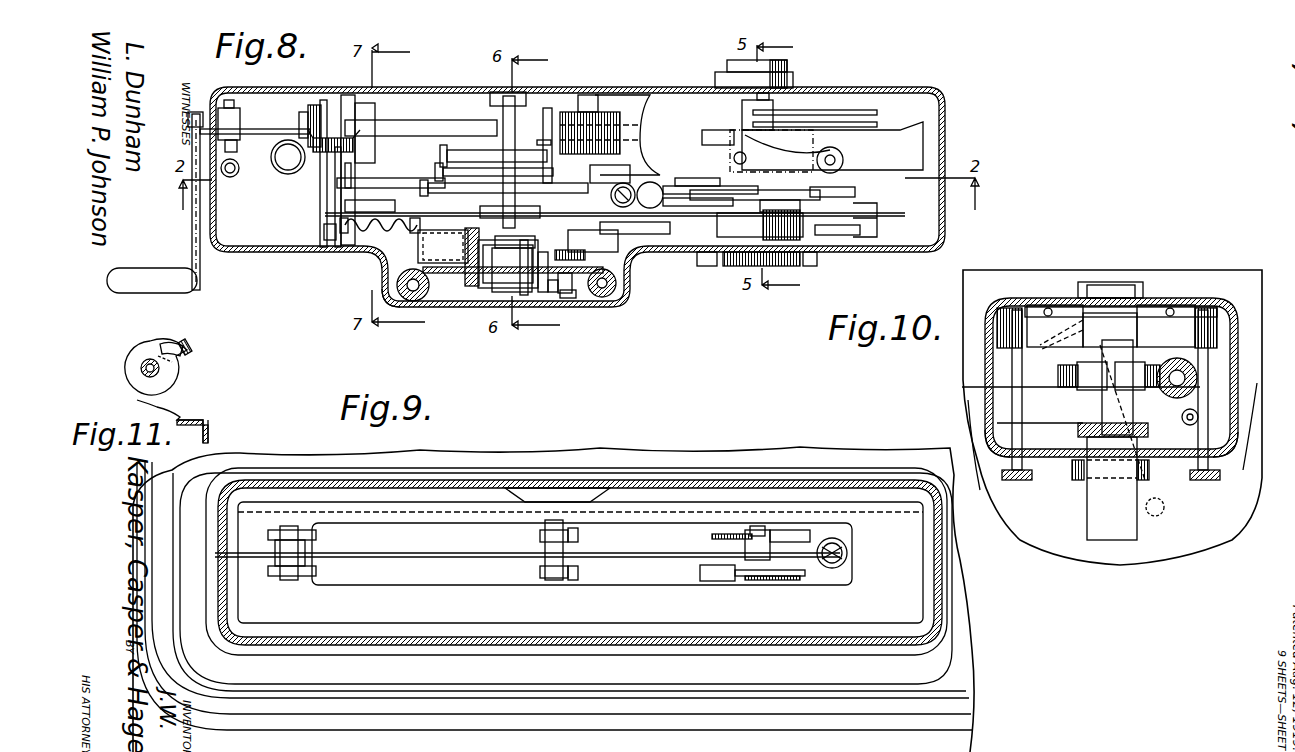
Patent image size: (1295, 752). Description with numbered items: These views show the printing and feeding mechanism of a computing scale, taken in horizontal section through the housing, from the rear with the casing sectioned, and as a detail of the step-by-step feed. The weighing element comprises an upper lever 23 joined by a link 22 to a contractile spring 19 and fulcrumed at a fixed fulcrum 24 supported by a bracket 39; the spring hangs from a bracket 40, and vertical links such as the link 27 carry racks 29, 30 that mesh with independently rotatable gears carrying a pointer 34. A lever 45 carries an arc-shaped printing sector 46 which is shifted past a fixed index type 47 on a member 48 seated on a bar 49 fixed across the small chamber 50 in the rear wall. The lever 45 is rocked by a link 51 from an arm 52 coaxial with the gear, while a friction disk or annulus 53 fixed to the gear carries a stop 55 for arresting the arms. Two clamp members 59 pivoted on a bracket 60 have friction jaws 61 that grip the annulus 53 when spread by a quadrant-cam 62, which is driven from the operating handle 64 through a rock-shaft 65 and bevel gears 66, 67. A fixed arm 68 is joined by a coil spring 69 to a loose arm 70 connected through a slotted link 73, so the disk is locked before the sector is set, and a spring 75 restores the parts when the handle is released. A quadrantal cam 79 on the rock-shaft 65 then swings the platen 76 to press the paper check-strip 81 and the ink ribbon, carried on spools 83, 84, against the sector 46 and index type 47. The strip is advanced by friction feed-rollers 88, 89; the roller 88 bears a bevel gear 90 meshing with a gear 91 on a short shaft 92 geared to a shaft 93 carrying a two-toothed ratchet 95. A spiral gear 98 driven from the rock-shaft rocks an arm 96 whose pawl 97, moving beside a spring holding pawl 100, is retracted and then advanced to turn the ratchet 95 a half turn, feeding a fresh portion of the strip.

In FIG. 9, the contractile spring 19 is at (848, 556).
In FIG. 9, the link 22 is at (272, 572).
In FIG. 9, the upper member or lever 23 is at (455, 556).
In FIG. 9, the fulcrum 24 is at (553, 580).
In FIG. 9, the vertical member or link 27 is at (735, 537).
In FIG. 9, the rack 29 is at (708, 538).
In FIG. 9, the rack 30 is at (797, 578).
In FIG. 8, the pointer 34 is at (880, 112).
In FIG. 9, the bracket 39 is at (527, 505).
In FIG. 8, the bracket 40 is at (895, 170).
In FIG. 8, the lever 45 is at (525, 278).
In FIG. 10, the lever 45 is at (1155, 518).
In FIG. 8, the printing sector 46 is at (447, 258).
In FIG. 10, the printing sector 46 is at (1062, 355).
In FIG. 8, the index type 47 is at (495, 275).
In FIG. 10, the index type 47 is at (1078, 322).
In FIG. 8, the type-supporting member 48 is at (478, 262).
In FIG. 8, the bar 49 is at (385, 260).
In FIG. 8, the chamber 50 is at (382, 294).
In FIG. 10, the chamber 50 is at (985, 388).
In FIG. 8, the link 51 is at (683, 225).
In FIG. 8, the arm 52 is at (730, 247).
In FIG. 8, the friction disk or annulus 53 is at (790, 197).
In FIG. 8, the stop 55 is at (870, 210).
In FIG. 8, the clamp members 59 is at (450, 180).
In FIG. 8, the bracket 60 is at (633, 150).
In FIG. 8, the friction jaws 61 is at (688, 185).
In FIG. 8, the quadrant-cam 62 is at (400, 163).
In FIG. 8, the operating handle 64 is at (192, 252).
In FIG. 8, the rock-shaft 65 is at (250, 120).
In FIG. 8, the bevel gear 66 is at (305, 110).
In FIG. 8, the bevel gear 67 is at (345, 145).
In FIG. 8, the arm 68 is at (322, 250).
In FIG. 8, the coil spring 69 is at (368, 215).
In FIG. 8, the arm 70 is at (405, 214).
In FIG. 8, the link 73 is at (492, 214).
In FIG. 8, the spring 75 is at (238, 176).
In FIG. 8, the platen 76 is at (512, 290).
In FIG. 8, the quadrantal cam 79 is at (555, 120).
In FIG. 10, the paper check-strip 81 is at (1098, 512).
In FIG. 8, the spool 83 is at (413, 292).
In FIG. 8, the spool 84 is at (606, 292).
In FIG. 8, the friction feed-roller 88 is at (542, 285).
In FIG. 8, the friction feed-roller 89 is at (562, 275).
In FIG. 8, the bevel gear 90 is at (555, 275).
In FIG. 10, the bevel gear 90 is at (1147, 330).
In FIG. 10, the bevel gear 91 is at (1180, 345).
In FIG. 8, the short shaft 92 is at (580, 280).
In FIG. 10, the short shaft 92 is at (1228, 445).
In FIG. 8, the shaft 93 is at (600, 195).
In FIG. 10, the shaft 93 is at (1180, 470).
In FIG. 11, the shaft 93 is at (143, 370).
In FIG. 11, the two-toothed ratchet 95 is at (170, 382).
In FIG. 11, the arm 96 is at (177, 360).
In FIG. 11, the pawl 97 is at (170, 342).
In FIG. 8, the spiral gear 98 is at (607, 98).
In FIG. 11, the spring holding pawl 100 is at (180, 408).